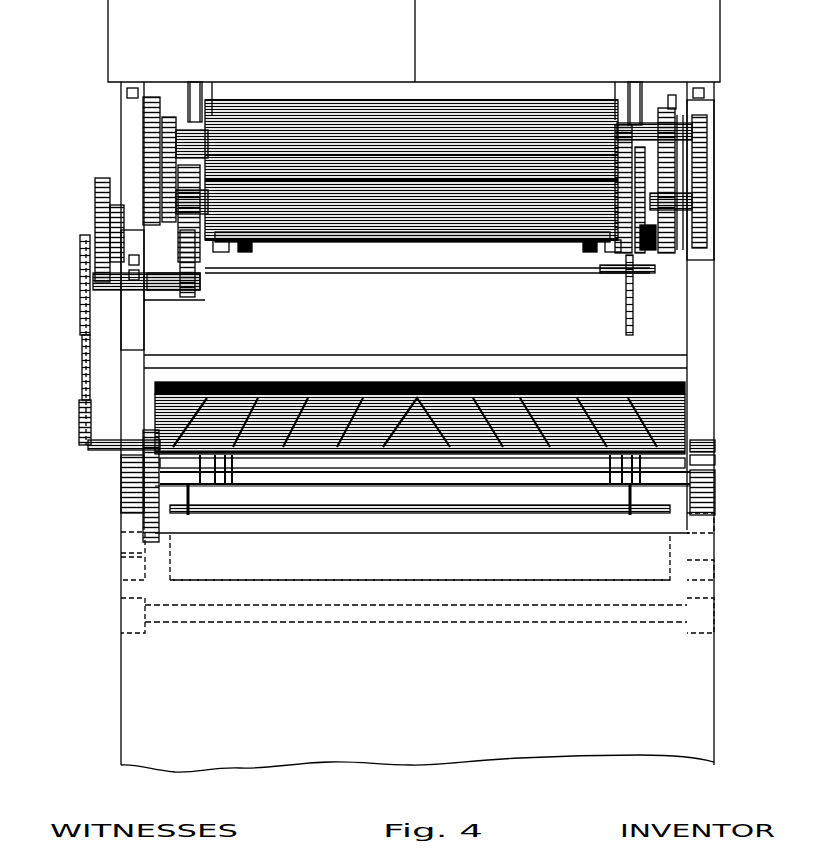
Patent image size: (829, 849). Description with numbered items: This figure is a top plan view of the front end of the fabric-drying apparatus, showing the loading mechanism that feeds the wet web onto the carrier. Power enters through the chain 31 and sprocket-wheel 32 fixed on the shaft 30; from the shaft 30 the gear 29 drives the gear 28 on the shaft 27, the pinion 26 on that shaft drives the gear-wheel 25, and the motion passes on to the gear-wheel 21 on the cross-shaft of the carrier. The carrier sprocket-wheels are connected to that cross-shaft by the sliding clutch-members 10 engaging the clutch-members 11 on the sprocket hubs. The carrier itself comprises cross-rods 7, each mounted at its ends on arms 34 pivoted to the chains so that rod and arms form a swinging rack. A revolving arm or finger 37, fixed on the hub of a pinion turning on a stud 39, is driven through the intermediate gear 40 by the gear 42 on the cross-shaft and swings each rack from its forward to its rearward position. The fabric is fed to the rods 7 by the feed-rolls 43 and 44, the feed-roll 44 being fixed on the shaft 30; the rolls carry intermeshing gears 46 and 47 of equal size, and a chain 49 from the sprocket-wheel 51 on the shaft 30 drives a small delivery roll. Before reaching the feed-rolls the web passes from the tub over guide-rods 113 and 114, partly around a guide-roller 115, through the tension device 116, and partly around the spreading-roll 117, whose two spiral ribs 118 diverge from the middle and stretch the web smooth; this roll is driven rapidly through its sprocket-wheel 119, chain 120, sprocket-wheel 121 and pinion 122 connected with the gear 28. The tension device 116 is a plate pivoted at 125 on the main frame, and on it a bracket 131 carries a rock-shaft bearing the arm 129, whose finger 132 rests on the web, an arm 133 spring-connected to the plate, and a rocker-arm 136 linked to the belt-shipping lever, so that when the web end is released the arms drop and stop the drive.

The cross-rods 7 is at (215, 118).
The sliding clutch-members 10 is at (246, 254).
The clutch-members 11 is at (216, 256).
The gear-wheel 21 is at (122, 298).
The gear-wheel 25 is at (95, 186).
The pinion 26 is at (95, 232).
The shaft 27 is at (114, 205).
The gear 28 is at (208, 194).
The gear 29 is at (208, 208).
The shaft 30 is at (186, 240).
The chain 31 is at (633, 295).
The sprocket-wheel 32 is at (618, 182).
The arms 34 is at (203, 92).
The revolving arm or finger 37 is at (714, 175).
The stud 39 is at (710, 192).
The intermediate gear 40 is at (672, 165).
The gear 42 is at (700, 246).
The feed-roll 43 is at (462, 105).
The feed-roll 44 is at (442, 242).
The gear 46 is at (143, 108).
The gear 47 is at (162, 178).
The chain 49 is at (762, 196).
The sprocket-wheel 51 is at (650, 248).
The guide-rod 113 is at (478, 620).
The guide-rod 114 is at (400, 605).
The guide-roller 115 is at (330, 515).
The tension device 116 is at (495, 466).
The spreading-roll 117 is at (498, 428).
The ribs 118 is at (330, 462).
The sprocket-wheel 119 is at (79, 416).
The chain 120 is at (82, 370).
The sprocket-wheel 121 is at (82, 302).
The pinion 122 is at (190, 298).
The pivot of tension plate 125 is at (118, 452).
The arm 129 is at (225, 478).
The bracket 131 is at (143, 468).
The finger 132 is at (432, 506).
The arm 133 is at (130, 485).
The rocker-arm 136 is at (190, 517).